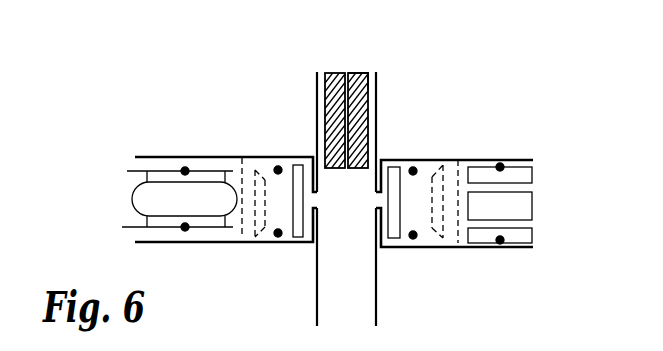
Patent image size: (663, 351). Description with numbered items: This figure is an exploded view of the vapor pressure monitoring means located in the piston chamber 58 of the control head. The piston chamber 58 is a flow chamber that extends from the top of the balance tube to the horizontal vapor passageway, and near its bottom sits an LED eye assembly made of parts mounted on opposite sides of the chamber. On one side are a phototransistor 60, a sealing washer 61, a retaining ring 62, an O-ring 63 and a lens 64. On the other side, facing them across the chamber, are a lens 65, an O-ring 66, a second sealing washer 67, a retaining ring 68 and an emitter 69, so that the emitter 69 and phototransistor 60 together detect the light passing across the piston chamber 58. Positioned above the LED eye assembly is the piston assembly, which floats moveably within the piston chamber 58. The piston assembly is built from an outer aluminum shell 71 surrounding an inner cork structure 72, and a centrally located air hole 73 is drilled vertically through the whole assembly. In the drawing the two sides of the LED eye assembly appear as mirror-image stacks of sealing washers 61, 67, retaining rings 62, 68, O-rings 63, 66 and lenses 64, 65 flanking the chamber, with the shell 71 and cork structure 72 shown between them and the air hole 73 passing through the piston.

The piston chamber 58 is at (338, 278).
The phototransistor 60 is at (140, 197).
The sealing washer 61 is at (241, 240).
The retaining ring 62 is at (255, 170).
The O-ring 63 is at (277, 167).
The lens 64 is at (298, 177).
The lens 65 is at (395, 175).
The O-ring 66 is at (417, 169).
The second sealing washer 67 is at (445, 173).
The retaining ring 68 is at (460, 240).
The emitter 69 is at (517, 208).
The outer aluminum shell 71 is at (322, 90).
The inner cork structure 72 is at (377, 75).
The air hole 73 is at (350, 80).